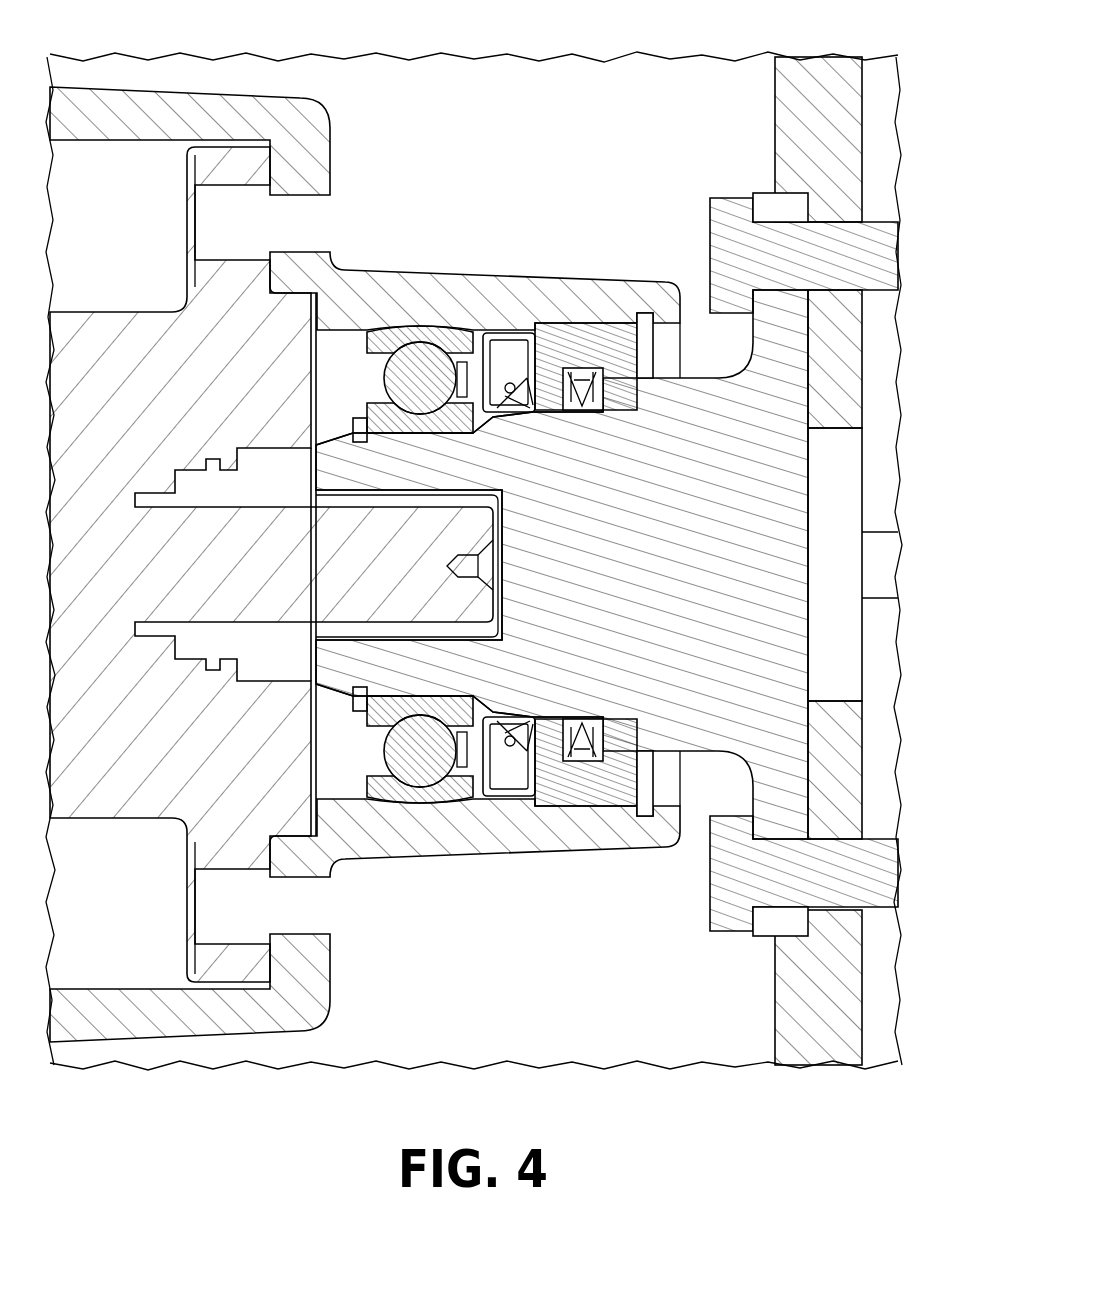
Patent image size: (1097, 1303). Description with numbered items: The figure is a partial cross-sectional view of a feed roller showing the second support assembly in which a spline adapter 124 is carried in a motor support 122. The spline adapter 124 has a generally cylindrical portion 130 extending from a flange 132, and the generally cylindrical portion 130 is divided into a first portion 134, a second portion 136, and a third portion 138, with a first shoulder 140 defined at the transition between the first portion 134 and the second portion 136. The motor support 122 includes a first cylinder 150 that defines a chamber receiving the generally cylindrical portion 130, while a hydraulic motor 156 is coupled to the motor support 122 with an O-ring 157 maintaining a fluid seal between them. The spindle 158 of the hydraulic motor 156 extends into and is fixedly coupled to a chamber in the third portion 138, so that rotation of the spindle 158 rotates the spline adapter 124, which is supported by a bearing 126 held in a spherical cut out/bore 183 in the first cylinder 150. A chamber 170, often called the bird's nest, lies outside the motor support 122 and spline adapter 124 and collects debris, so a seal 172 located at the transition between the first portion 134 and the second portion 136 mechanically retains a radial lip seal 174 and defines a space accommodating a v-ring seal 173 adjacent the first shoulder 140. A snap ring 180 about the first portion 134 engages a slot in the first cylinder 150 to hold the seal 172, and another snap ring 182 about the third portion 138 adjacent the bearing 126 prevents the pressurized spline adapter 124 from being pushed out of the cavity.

The motor support 122 is at (175, 100).
The spline adapter 124 is at (818, 502).
The bearing 126 is at (408, 330).
The generally cylindrical portion 130 is at (711, 762).
The flange 132 is at (793, 338).
The first portion 134 is at (720, 579).
The second portion 136 is at (570, 579).
The third portion 138 is at (436, 479).
The first shoulder 140 is at (606, 722).
The first cylinder 150 is at (470, 850).
The hydraulic motor 156 is at (118, 298).
The O-ring 157 is at (312, 830).
The spindle 158 is at (370, 579).
The chamber 170 is at (476, 125).
The seal 172 is at (617, 790).
The v-ring seal 173 is at (593, 737).
The radial lip seal 174 is at (512, 360).
The snap ring 180 is at (645, 315).
The snap ring 182 is at (353, 700).
The spherical cut out/bore 183 is at (393, 812).